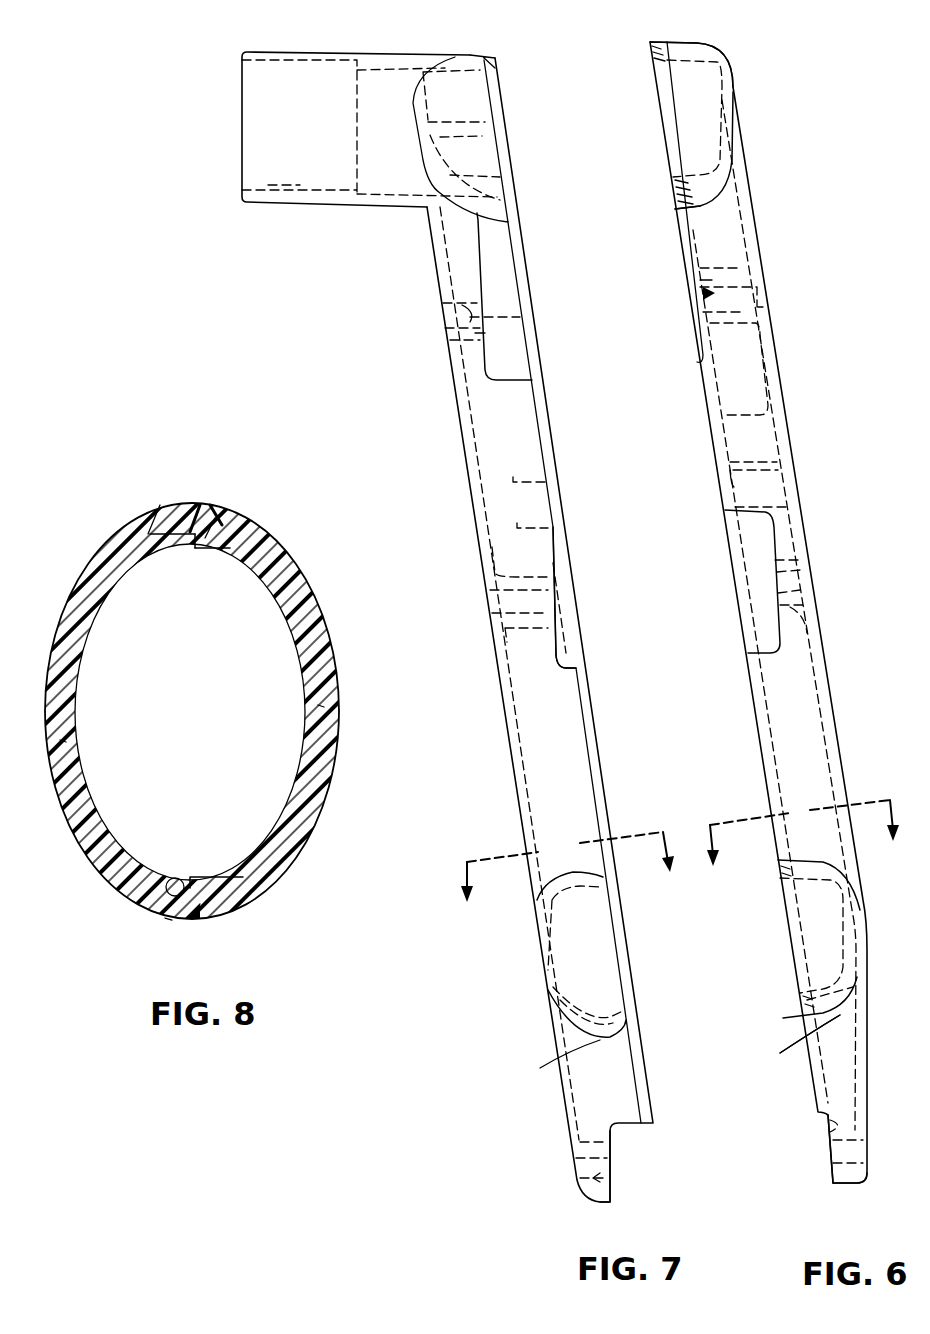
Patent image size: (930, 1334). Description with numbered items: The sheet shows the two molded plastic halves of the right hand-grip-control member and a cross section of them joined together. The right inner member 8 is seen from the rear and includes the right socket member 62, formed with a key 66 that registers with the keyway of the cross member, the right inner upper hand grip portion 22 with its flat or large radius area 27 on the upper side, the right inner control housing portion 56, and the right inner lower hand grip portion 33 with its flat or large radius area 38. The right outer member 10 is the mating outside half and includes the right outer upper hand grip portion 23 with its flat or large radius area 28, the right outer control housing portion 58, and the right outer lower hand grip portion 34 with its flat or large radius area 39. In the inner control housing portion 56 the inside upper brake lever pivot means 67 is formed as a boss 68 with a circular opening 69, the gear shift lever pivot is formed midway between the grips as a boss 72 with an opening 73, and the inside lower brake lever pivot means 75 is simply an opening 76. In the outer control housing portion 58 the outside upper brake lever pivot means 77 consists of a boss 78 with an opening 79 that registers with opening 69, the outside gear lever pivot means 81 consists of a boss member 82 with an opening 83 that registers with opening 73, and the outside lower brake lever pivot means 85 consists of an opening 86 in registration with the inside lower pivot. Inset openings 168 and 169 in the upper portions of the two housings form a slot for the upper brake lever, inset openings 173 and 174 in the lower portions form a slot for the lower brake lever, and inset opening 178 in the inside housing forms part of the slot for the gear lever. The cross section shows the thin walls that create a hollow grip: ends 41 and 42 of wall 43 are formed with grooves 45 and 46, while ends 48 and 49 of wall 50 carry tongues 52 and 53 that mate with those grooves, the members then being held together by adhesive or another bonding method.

In FIG. 7, the right inner member 8 is at (592, 1204).
In FIG. 6, the right inner member 8 is at (807, 850).
In FIG. 8, the right inner member 8 is at (135, 520).
In FIG. 6, the right outer member 10 is at (853, 1183).
In FIG. 8, the right outer member 10 is at (248, 510).
In FIG. 7, the right inner upper hand grip portion 22 is at (413, 103).
In FIG. 6, the right outer upper hand grip portion 23 is at (730, 137).
In FIG. 7, the flat or large radius area 27 is at (470, 55).
In FIG. 6, the flat or large radius area 28 is at (680, 42).
In FIG. 7, the right inner lower hand grip portion 33 is at (540, 1068).
In FIG. 6, the right outer lower hand grip portion 34 is at (780, 1053).
In FIG. 7, the flat or large radius area 38 is at (572, 868).
In FIG. 6, the flat or large radius area 39 is at (807, 860).
In FIG. 8, the end of wall 41 is at (218, 872).
In FIG. 8, the end of wall 42 is at (222, 550).
In FIG. 8, the wall 43 is at (318, 705).
In FIG. 8, the groove 45 is at (170, 880).
In FIG. 8, the groove 46 is at (185, 546).
In FIG. 8, the end of wall 48 is at (165, 918).
In FIG. 8, the end of wall 49 is at (163, 545).
In FIG. 8, the wall 50 is at (66, 740).
In FIG. 8, the tongue 52 is at (205, 915).
In FIG. 8, the tongue 53 is at (208, 512).
In FIG. 7, the right inner control housing portion 56 is at (460, 415).
In FIG. 6, the right outer control housing portion 58 is at (830, 708).
In FIG. 7, the right socket member 62 is at (407, 53).
In FIG. 7, the key 66 is at (268, 185).
In FIG. 7, the inside upper brake lever pivot means 67 is at (465, 285).
In FIG. 7, the boss 68 is at (482, 334).
In FIG. 7, the circular opening 69 is at (480, 318).
In FIG. 7, the boss 72 is at (525, 573).
In FIG. 7, the opening 73 is at (532, 608).
In FIG. 7, the inside lower brake lever pivot means 75 is at (590, 1135).
In FIG. 7, the opening 76 is at (595, 1177).
In FIG. 6, the outside upper brake lever pivot means 77 is at (722, 266).
In FIG. 6, the boss 78 is at (700, 272).
In FIG. 6, the opening 79 is at (697, 303).
In FIG. 6, the outside gear lever pivot means 81 is at (808, 556).
In FIG. 6, the boss member 82 is at (812, 633).
In FIG. 6, the opening 83 is at (790, 590).
In FIG. 6, the outside lower brake lever pivot means 85 is at (827, 1123).
In FIG. 6, the opening 86 is at (817, 1153).
In FIG. 7, the inset opening 168 is at (510, 375).
In FIG. 6, the inset opening 169 is at (687, 228).
In FIG. 7, the inset opening 173 is at (612, 1191).
In FIG. 6, the inset opening 174 is at (833, 1177).
In FIG. 7, the inset opening 178 is at (573, 643).